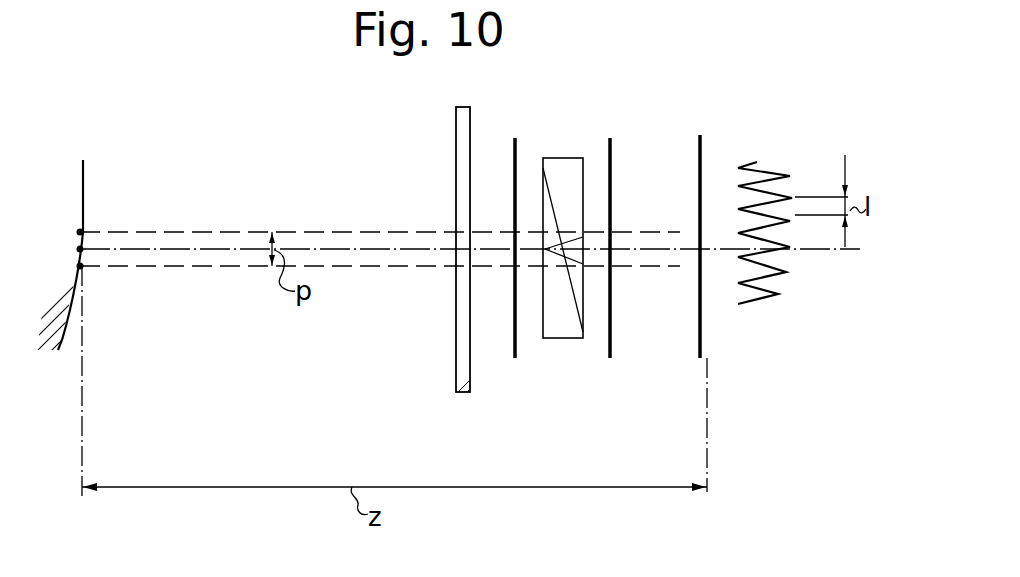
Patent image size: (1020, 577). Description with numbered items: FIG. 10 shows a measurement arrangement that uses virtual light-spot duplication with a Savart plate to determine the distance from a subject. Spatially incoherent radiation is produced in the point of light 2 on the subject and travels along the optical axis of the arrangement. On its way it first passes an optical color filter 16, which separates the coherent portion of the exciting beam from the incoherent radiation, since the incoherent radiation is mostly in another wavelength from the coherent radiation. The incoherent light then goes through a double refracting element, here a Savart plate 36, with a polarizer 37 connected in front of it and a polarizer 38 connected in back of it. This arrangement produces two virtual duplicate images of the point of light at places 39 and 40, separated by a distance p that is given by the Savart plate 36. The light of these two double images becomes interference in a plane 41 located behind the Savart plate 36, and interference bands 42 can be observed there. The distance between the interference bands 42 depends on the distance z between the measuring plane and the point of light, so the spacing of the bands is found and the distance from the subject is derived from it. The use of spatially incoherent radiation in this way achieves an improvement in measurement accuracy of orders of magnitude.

The point of light 2 is at (82, 248).
The place of virtual duplicate image 39 is at (81, 231).
The place of virtual duplicate image 40 is at (81, 268).
The optical color filter 16 is at (462, 370).
The polarizer 37 is at (517, 343).
The Savart plate 36 is at (570, 170).
The polarizer 38 is at (612, 343).
The plane 41 is at (702, 349).
The interference bands 42 is at (762, 298).